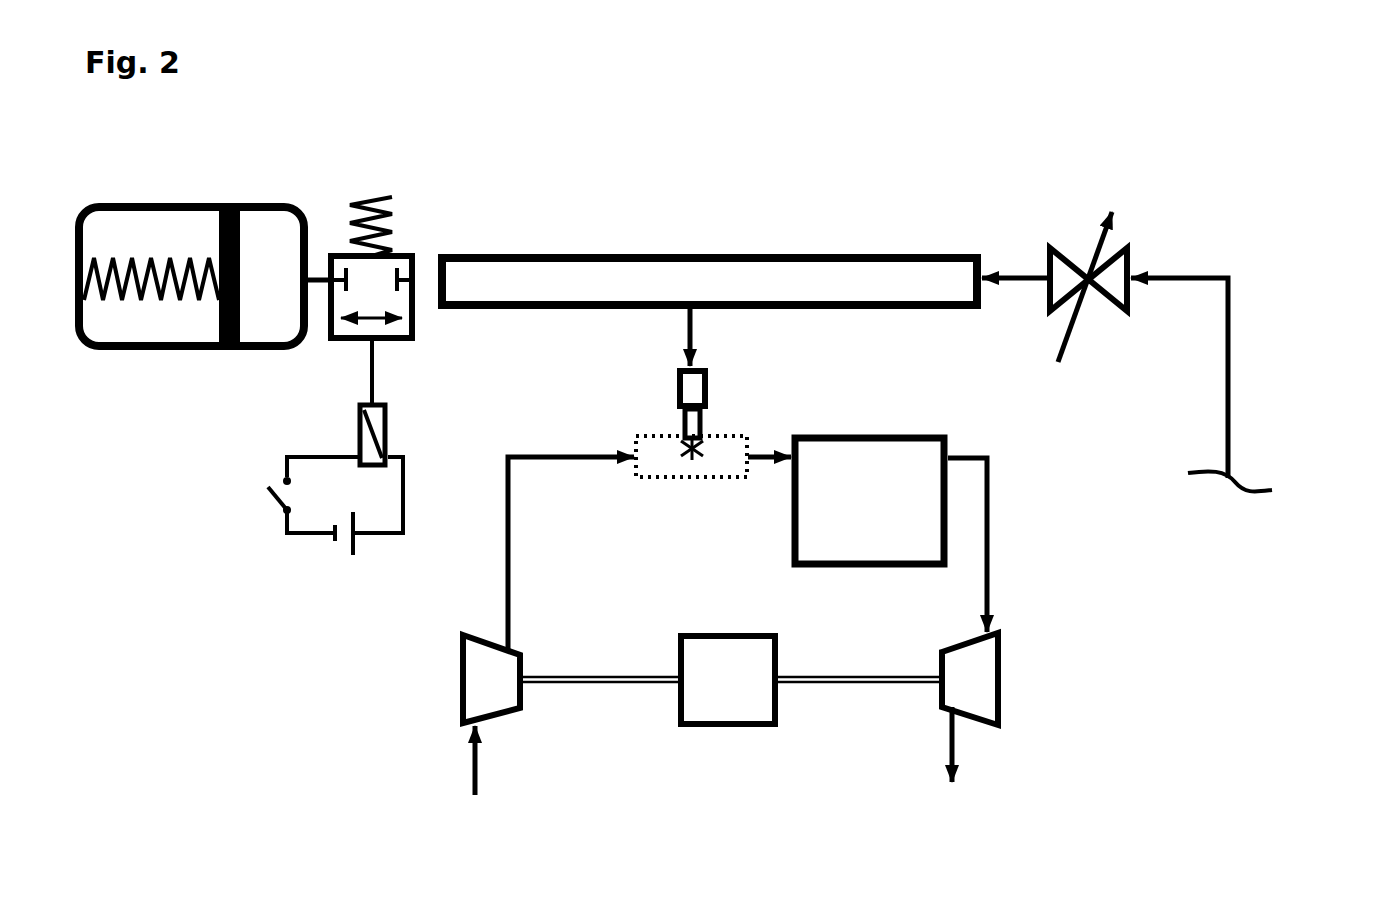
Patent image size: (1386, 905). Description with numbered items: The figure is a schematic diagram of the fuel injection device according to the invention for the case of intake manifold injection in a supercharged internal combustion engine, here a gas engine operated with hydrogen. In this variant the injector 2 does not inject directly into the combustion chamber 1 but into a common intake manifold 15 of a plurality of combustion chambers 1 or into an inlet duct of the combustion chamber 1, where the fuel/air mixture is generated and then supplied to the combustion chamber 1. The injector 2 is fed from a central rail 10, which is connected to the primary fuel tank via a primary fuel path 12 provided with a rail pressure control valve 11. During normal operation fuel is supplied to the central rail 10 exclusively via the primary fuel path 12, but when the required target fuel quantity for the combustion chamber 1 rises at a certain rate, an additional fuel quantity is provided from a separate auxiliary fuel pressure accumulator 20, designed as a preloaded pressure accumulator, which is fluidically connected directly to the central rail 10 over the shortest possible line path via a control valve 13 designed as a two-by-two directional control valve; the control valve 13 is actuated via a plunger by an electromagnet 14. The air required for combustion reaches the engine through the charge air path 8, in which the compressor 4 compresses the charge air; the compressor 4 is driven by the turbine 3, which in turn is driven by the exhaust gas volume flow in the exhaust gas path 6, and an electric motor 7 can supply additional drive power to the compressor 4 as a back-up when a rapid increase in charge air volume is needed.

The combustion chamber 1 is at (773, 527).
The injector 2 is at (713, 369).
The turbine 3 is at (1014, 709).
The compressor 4 is at (449, 687).
The exhaust gas path 6 is at (988, 520).
The electric motor 7 is at (671, 711).
The charge air path 8 is at (505, 558).
The central rail 10 is at (749, 246).
The rail pressure control valve 11 is at (1144, 243).
The primary fuel path 12 is at (1230, 335).
The control valve 13 is at (398, 241).
The electromagnet 14 is at (340, 425).
The intake manifold 15 is at (652, 482).
The auxiliary fuel pressure accumulator 20 is at (200, 200).